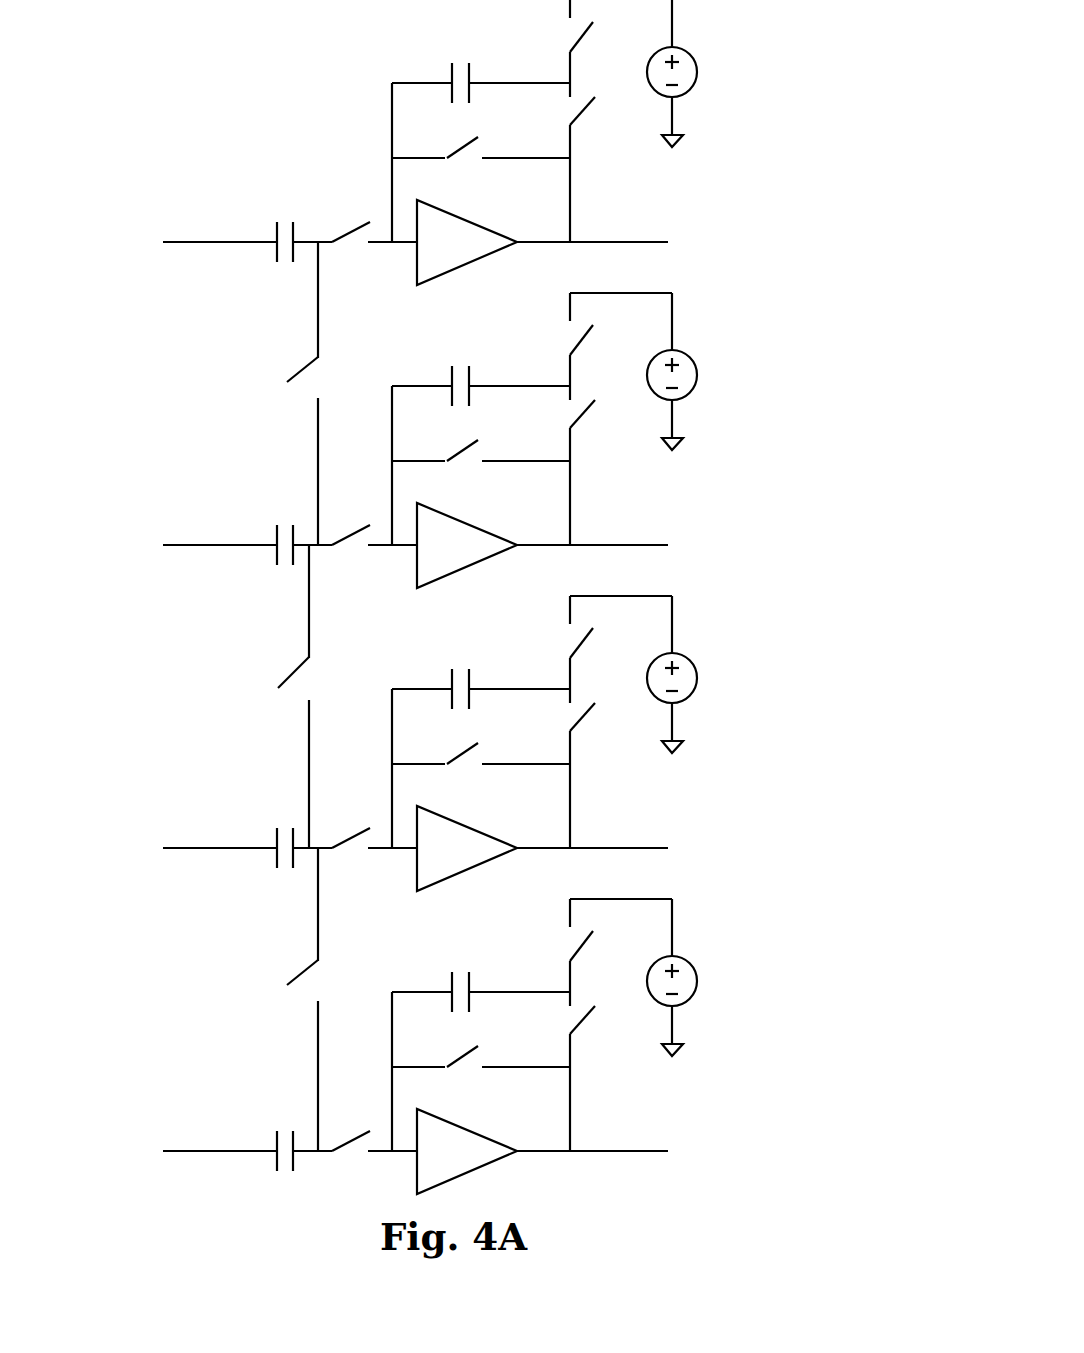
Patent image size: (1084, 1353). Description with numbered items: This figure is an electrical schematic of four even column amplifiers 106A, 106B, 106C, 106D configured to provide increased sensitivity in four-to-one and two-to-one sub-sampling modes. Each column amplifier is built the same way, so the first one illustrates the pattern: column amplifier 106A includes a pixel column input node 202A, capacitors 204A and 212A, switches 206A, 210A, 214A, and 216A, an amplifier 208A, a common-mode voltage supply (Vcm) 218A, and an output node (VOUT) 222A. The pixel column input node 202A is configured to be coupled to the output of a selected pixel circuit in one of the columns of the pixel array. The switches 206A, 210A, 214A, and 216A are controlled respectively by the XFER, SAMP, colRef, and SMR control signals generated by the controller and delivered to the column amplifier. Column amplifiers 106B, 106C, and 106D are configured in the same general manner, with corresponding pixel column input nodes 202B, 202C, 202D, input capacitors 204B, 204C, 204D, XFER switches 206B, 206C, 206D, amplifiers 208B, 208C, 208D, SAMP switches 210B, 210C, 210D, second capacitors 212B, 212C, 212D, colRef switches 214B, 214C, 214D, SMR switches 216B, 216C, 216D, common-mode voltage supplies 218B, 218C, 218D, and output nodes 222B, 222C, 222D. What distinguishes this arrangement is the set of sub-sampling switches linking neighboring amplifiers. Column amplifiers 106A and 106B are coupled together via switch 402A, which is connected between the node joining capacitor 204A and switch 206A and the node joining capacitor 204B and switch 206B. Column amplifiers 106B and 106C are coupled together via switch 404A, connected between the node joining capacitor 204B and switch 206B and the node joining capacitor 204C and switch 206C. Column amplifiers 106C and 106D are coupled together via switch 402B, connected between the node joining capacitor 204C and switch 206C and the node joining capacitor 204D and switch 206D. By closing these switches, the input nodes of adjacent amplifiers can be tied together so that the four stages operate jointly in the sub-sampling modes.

The column amplifier 106A is at (425, 147).
The column amplifier 106B is at (417, 445).
The column amplifier 106C is at (417, 748).
The column amplifier 106D is at (418, 1051).
The pixel column input node 202A is at (190, 242).
The pixel column input node 202B is at (190, 545).
The pixel column input node 202C is at (190, 848).
The pixel column input node 202D is at (190, 1151).
The capacitor 204A is at (277, 252).
The capacitor 204B is at (277, 555).
The capacitor 204C is at (277, 858).
The capacitor 204D is at (277, 1161).
The switch 206A is at (344, 242).
The switch 206B is at (344, 545).
The switch 206C is at (344, 848).
The switch 206D is at (344, 1151).
The amplifier 208A is at (477, 260).
The amplifier 208B is at (477, 563).
The amplifier 208C is at (477, 866).
The amplifier 208D is at (477, 1169).
The switch 210A is at (465, 147).
The switch 210B is at (465, 450).
The switch 210C is at (465, 753).
The switch 210D is at (465, 1056).
The capacitor 212A is at (452, 72).
The capacitor 212B is at (452, 375).
The capacitor 212C is at (452, 678).
The capacitor 212D is at (452, 981).
The switch 214A is at (587, 27).
The switch 214B is at (587, 330).
The switch 214C is at (587, 633).
The switch 214D is at (587, 936).
The switch 216A is at (585, 110).
The switch 216B is at (585, 413).
The switch 216C is at (585, 716).
The switch 216D is at (585, 1019).
The common-mode voltage supply 218A is at (705, 56).
The common-mode voltage supply 218B is at (705, 359).
The common-mode voltage supply 218C is at (705, 662).
The common-mode voltage supply 218D is at (705, 965).
The output node 222A is at (655, 245).
The output node 222B is at (655, 548).
The output node 222C is at (655, 851).
The output node 222D is at (655, 1154).
The switch 402A is at (300, 372).
The switch 402B is at (300, 975).
The switch 404A is at (296, 670).